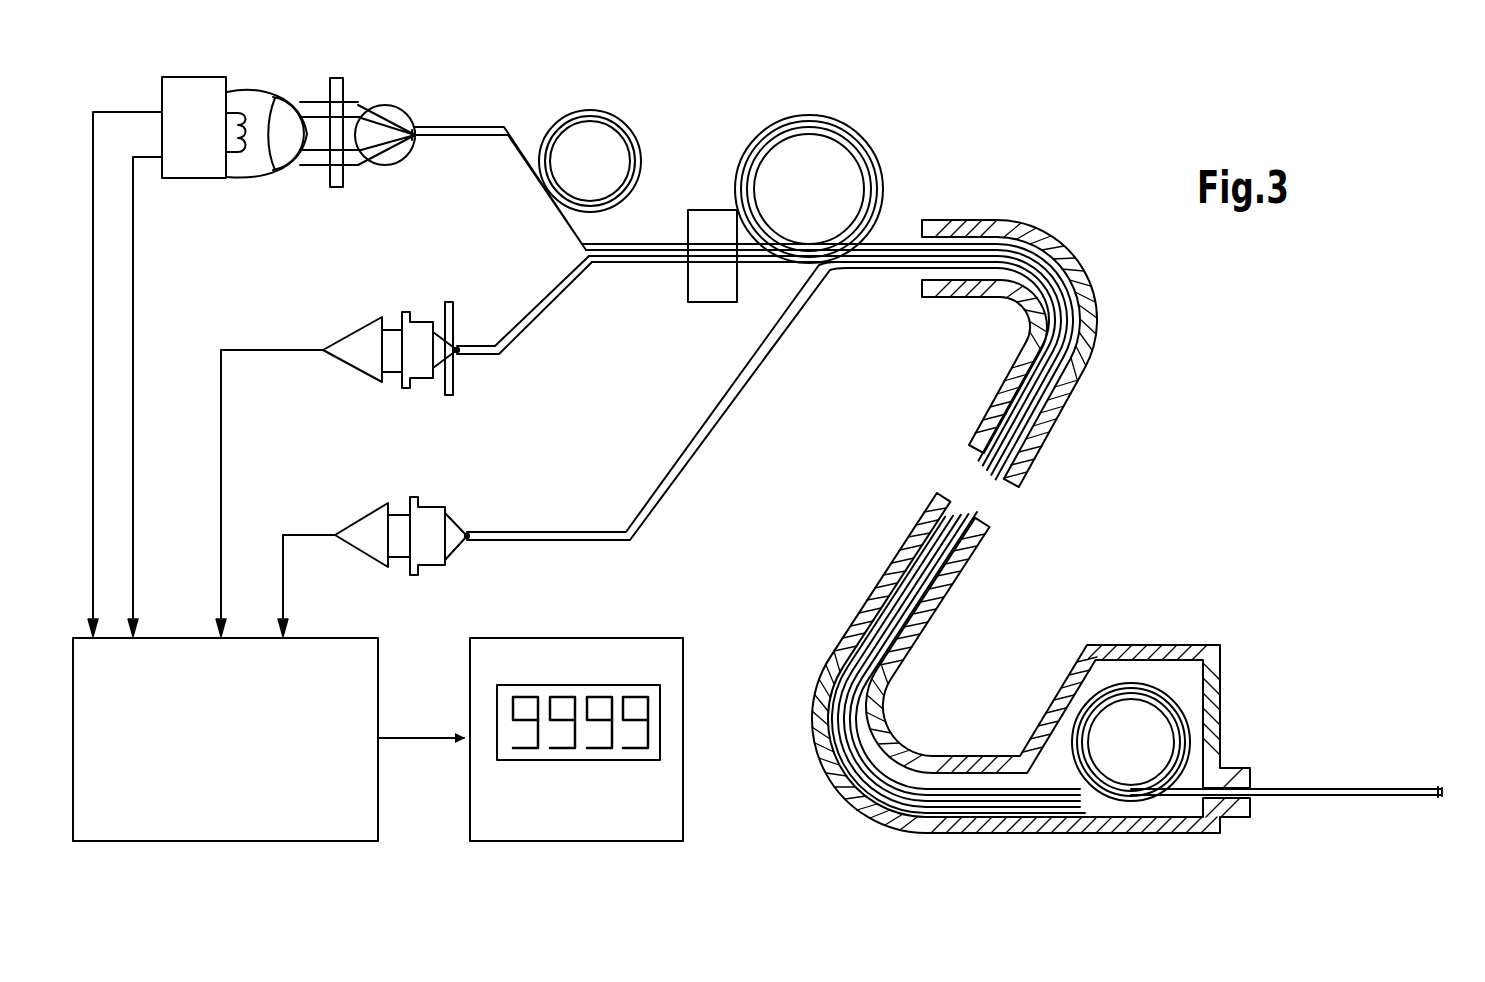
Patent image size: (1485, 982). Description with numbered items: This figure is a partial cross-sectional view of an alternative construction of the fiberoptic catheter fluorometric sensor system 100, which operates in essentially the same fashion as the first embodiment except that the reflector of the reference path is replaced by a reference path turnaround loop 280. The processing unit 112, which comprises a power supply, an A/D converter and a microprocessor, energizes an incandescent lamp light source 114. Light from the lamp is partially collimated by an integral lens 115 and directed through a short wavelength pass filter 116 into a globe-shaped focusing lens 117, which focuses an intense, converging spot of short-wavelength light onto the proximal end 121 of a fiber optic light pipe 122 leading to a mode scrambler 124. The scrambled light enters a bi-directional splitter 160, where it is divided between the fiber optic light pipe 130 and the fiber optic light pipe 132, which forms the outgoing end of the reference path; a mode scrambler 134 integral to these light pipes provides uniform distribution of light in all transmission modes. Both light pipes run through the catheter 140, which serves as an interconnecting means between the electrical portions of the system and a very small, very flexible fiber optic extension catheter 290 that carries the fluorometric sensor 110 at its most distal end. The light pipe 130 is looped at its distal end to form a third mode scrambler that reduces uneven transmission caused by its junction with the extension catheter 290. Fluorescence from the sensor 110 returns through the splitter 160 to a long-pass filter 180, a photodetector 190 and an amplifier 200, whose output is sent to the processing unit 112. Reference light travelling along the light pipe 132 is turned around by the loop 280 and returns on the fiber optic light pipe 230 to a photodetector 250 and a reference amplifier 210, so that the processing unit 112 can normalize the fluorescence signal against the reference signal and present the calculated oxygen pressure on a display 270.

The fiberoptic catheter fluorometric sensor system 100 is at (1148, 539).
The fluorometric sensor 110 is at (1442, 797).
The processing unit 112 is at (280, 810).
The incandescent lamp light source 114 is at (193, 151).
The integral lens 115 is at (287, 120).
The short wavelength pass filter 116 is at (337, 182).
The globe-shaped focusing lens 117 is at (407, 108).
The proximal end 121 is at (421, 148).
The fiber optic light pipe 122 is at (518, 132).
The mode scrambler 124 is at (638, 115).
The fiber optic light pipe 130 is at (1187, 794).
The fiber optic light pipe 132 is at (903, 238).
The mode scrambler 134 is at (884, 150).
The catheter 140 is at (1080, 398).
The bi-directional splitter 160 is at (706, 291).
The long-pass filter 180 is at (458, 386).
The photodetector 190 is at (418, 365).
The amplifier 200 is at (360, 348).
The reference amplifier 210 is at (372, 532).
The fiber optic light pipe 230 is at (630, 541).
The photodetector 250 is at (430, 553).
The display 270 is at (640, 797).
The reference path turnaround loop 280 is at (1196, 680).
The fiber optic extension catheter 290 is at (1318, 789).